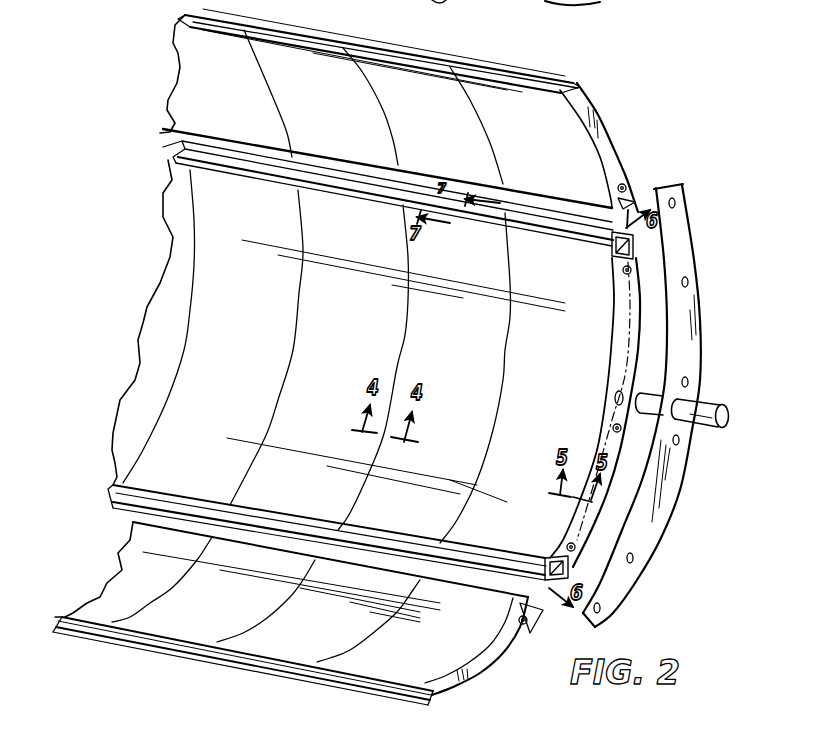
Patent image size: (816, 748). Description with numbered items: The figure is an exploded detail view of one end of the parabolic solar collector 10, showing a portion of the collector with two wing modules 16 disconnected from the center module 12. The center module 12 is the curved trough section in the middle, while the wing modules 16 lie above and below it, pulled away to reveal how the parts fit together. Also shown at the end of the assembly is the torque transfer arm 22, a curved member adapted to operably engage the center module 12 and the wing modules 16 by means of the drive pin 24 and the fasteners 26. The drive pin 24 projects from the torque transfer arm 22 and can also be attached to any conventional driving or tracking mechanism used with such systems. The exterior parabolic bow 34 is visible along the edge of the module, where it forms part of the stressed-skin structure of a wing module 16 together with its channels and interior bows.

The parabolic solar collector 10 is at (630, 128).
The center module 12 is at (215, 318).
The wing modules 16 is at (240, 77).
The torque transfer arm 22 is at (682, 250).
The drive pin 24 is at (720, 407).
The fasteners 26 is at (626, 184).
The exterior parabolic bow 34 is at (622, 330).